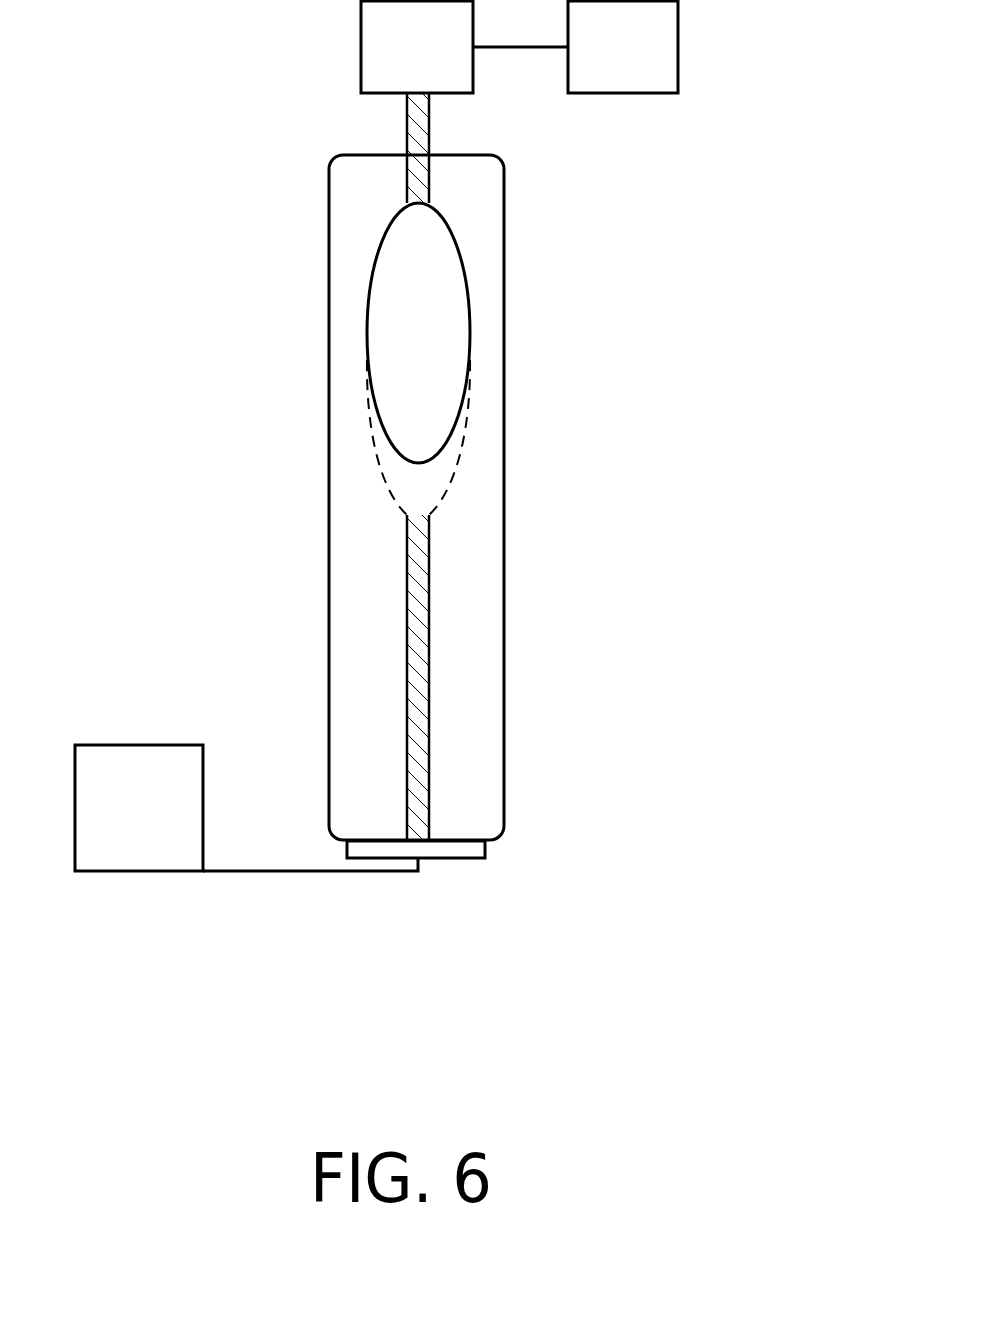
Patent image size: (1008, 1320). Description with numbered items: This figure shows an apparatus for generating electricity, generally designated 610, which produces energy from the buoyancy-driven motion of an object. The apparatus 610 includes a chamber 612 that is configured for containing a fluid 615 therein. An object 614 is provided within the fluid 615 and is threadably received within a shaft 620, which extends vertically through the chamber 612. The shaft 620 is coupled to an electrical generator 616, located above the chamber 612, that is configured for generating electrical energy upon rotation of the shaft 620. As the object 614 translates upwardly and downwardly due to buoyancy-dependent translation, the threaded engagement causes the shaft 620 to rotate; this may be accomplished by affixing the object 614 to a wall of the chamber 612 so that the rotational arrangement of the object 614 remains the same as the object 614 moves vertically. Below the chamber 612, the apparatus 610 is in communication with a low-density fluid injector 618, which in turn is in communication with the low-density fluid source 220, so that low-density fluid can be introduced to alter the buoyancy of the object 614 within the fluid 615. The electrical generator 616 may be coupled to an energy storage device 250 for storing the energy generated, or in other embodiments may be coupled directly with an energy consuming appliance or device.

The apparatus for generating electricity 610 is at (705, 770).
The chamber 612 is at (505, 566).
The object 614 is at (420, 337).
The fluid 615 is at (462, 533).
The electrical generator 616 is at (462, 65).
The low-density fluid injector 618 is at (468, 848).
The shaft 620 is at (418, 697).
The low-density fluid source 220 is at (179, 826).
The energy storage device 250 is at (660, 65).